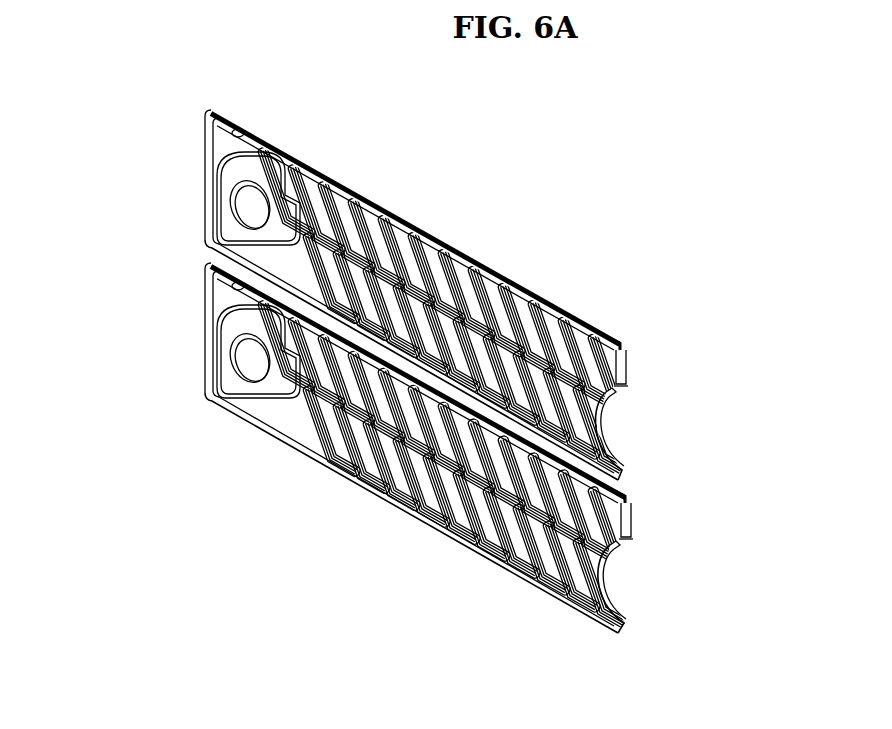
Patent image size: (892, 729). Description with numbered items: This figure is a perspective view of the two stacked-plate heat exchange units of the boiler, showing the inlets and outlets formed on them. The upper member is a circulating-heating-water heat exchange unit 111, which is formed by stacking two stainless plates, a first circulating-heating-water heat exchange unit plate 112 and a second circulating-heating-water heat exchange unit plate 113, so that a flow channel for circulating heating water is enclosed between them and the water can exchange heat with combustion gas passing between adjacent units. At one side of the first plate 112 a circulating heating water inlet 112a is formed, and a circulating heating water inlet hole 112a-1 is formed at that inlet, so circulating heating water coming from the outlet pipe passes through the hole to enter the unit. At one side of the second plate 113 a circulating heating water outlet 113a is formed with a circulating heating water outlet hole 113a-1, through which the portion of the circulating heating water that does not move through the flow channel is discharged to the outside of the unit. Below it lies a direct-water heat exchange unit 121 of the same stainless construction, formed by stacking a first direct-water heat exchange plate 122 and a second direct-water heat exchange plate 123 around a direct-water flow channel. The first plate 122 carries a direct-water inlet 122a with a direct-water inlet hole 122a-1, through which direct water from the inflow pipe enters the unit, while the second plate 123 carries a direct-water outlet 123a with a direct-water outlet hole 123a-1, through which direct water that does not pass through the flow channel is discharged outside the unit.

The circulating-heating-water heat exchange unit 111 is at (178, 183).
The first circulating-heating-water heat exchange unit plate 112 is at (600, 372).
The circulating heating water inlet 112a is at (614, 402).
The circulating heating water inlet hole 112a-1 is at (616, 418).
The second circulating-heating-water heat exchange unit plate 113 is at (629, 346).
The circulating heating water outlet 113a is at (628, 372).
The circulating heating water outlet hole 113a-1 is at (630, 385).
The direct-water heat exchange unit 121 is at (178, 323).
The first direct-water heat exchange plate 122 is at (590, 545).
The direct-water inlet 122a is at (592, 620).
The direct-water inlet hole 122a-1 is at (620, 557).
The second direct-water heat exchange plate 123 is at (628, 491).
The direct-water outlet 123a is at (622, 516).
The direct-water outlet hole 123a-1 is at (622, 537).